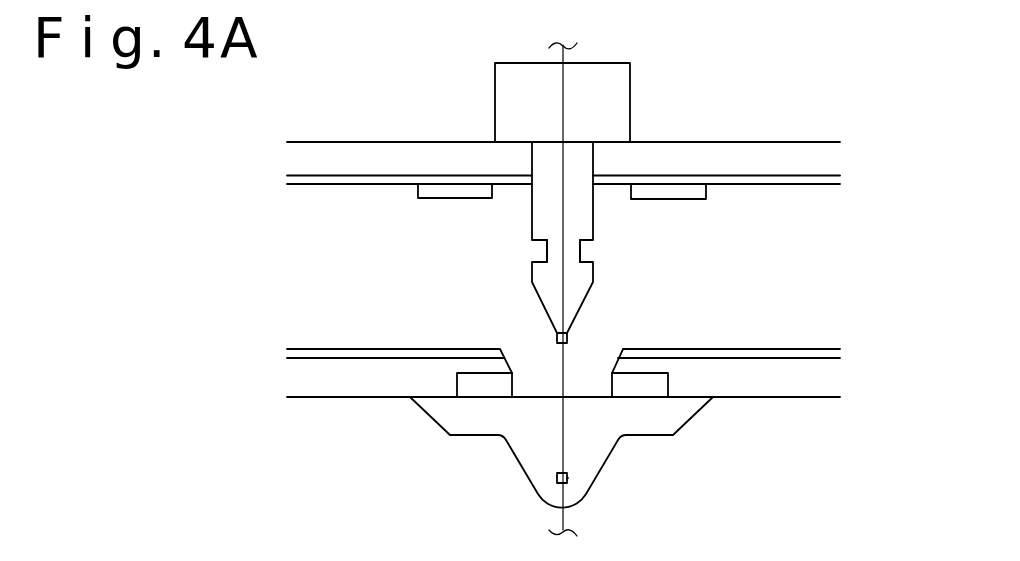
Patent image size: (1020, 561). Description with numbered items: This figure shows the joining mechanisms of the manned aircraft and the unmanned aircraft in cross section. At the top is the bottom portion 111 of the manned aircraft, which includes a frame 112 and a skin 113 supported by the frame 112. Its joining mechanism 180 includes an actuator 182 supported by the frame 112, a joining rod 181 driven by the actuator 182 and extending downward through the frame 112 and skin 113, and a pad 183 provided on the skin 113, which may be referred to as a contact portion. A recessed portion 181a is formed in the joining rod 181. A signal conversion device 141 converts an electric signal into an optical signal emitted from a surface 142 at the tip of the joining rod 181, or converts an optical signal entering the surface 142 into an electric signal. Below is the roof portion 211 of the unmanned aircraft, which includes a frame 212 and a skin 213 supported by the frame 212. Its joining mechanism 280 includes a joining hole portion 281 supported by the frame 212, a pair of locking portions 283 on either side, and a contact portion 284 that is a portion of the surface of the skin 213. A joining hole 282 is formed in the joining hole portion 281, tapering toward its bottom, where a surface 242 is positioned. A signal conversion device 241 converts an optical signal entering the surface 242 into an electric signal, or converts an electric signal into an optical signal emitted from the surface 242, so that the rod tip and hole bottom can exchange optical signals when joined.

The bottom portion 111 is at (268, 147).
The frame 112 is at (362, 152).
The skin 113 is at (333, 187).
The signal conversion device 141 is at (567, 332).
The surface 142 is at (566, 345).
The joining mechanism 180 is at (432, 222).
The joining rod 181 is at (587, 205).
The recessed portion 181a is at (580, 248).
The actuator 182 is at (625, 103).
The pad 183 is at (688, 200).
The roof portion 211 is at (268, 380).
The frame 212 is at (362, 378).
The skin 213 is at (335, 349).
The signal conversion device 241 is at (568, 480).
The surface 242 is at (562, 472).
The joining mechanism 280 is at (433, 320).
The joining hole portion 281 is at (683, 415).
The joining hole 282 is at (550, 383).
The locking portions 283 is at (487, 375).
The contact portion 284 is at (648, 350).